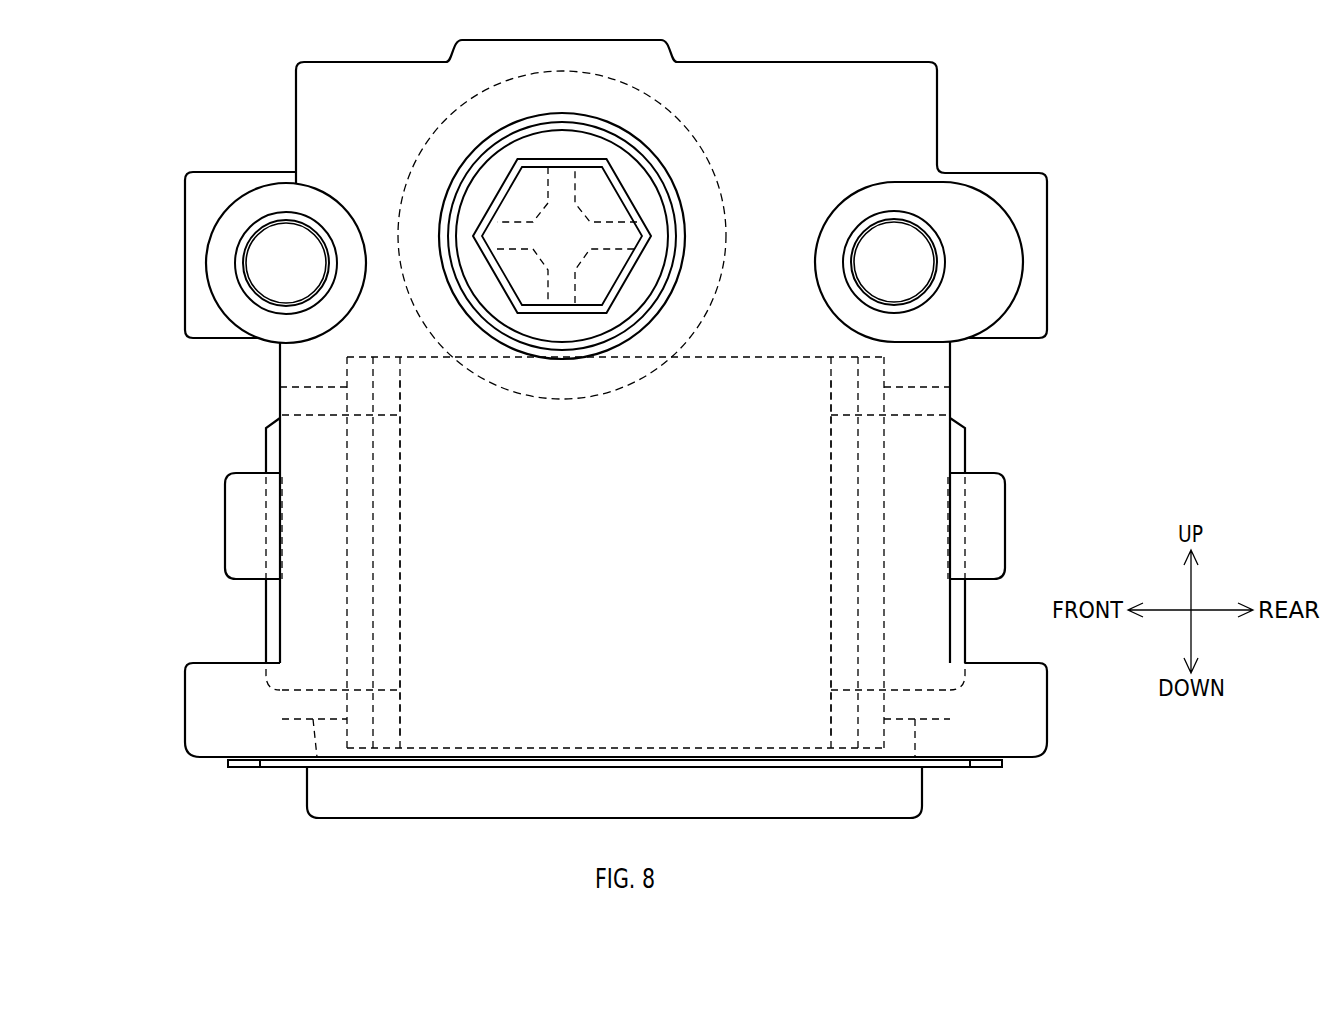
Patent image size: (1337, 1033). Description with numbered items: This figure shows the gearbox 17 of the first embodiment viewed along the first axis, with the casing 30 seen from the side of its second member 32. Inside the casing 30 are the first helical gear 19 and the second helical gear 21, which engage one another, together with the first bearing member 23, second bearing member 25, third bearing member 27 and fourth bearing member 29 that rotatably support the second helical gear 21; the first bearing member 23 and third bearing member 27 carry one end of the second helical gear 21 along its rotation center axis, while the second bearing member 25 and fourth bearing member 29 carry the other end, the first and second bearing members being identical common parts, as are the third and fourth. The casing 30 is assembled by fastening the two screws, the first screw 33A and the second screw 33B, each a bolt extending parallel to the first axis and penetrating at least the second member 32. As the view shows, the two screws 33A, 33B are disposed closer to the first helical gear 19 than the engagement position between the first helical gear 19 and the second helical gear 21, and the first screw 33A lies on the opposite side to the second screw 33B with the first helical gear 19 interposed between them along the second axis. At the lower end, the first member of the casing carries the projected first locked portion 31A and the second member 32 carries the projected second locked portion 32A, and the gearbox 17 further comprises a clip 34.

The gearbox 17 is at (878, 52).
The first helical gear 19 is at (697, 128).
The second helical gear 21 is at (733, 357).
The first bearing member 23 is at (400, 613).
The second bearing member 25 is at (831, 617).
The third bearing member 27 is at (305, 768).
The fourth bearing member 29 is at (930, 770).
The casing 30 is at (938, 99).
The first locked portion 31A is at (614, 823).
The second locked portion 32A is at (507, 813).
The second member 32 is at (684, 702).
The first screw 33A is at (280, 247).
The second screw 33B is at (903, 246).
The clip 34 is at (993, 767).